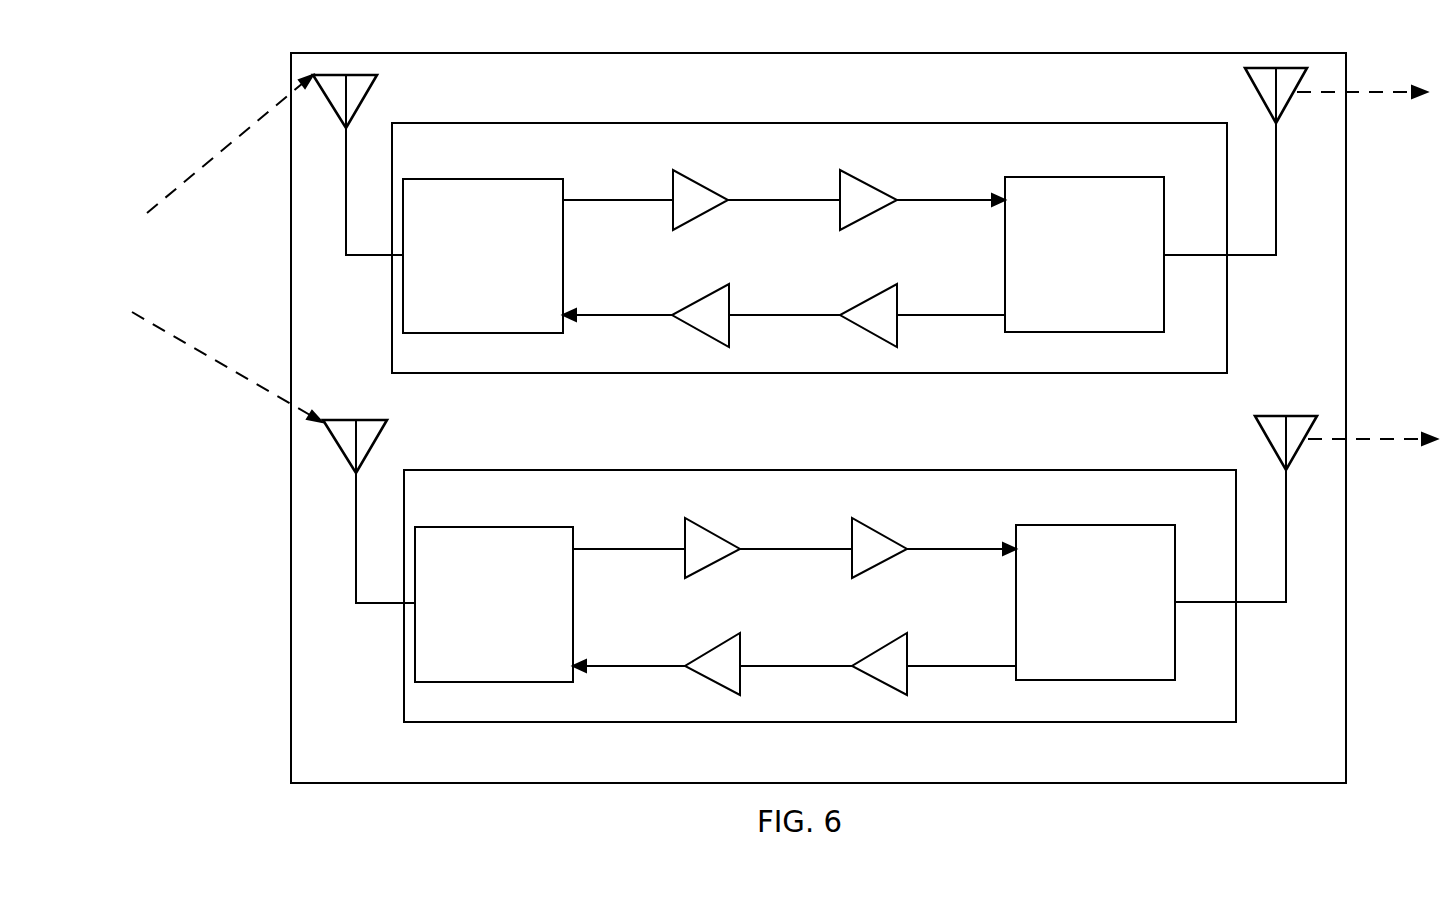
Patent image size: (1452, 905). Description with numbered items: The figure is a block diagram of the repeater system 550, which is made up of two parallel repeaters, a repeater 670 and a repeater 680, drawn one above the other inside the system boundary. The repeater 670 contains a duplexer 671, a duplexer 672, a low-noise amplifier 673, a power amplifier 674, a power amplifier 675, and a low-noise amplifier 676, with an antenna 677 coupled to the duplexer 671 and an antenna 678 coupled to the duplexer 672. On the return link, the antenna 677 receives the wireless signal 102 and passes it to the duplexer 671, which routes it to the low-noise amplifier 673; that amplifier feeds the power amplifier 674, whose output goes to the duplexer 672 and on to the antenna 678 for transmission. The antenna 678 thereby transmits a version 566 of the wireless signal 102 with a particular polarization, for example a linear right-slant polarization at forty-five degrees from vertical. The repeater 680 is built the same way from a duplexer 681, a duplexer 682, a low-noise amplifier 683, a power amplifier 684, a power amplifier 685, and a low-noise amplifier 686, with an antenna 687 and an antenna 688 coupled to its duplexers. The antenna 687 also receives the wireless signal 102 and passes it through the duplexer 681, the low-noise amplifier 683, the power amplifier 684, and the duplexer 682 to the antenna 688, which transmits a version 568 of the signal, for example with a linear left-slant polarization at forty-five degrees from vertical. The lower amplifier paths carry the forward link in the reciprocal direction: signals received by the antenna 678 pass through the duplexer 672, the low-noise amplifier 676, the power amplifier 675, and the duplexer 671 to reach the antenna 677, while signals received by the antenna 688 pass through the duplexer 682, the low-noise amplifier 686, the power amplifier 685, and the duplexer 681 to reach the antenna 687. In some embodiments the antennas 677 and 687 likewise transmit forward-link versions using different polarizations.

The repeater system 550 is at (1093, 53).
The wireless signal 102 is at (227, 138).
The version of the wireless signal 566 is at (1374, 93).
The version of the wireless signal 568 is at (1366, 440).
The repeater 670 is at (990, 123).
The duplexer 671 is at (504, 179).
The duplexer 672 is at (1105, 177).
The low-noise amplifier 673 is at (698, 215).
The power amplifier 674 is at (865, 216).
The power amplifier 675 is at (700, 331).
The low-noise amplifier 676 is at (870, 332).
The antenna 677 is at (366, 95).
The antenna 678 is at (1255, 85).
The repeater 680 is at (1000, 470).
The duplexer 681 is at (515, 527).
The duplexer 682 is at (1116, 525).
The low-noise amplifier 683 is at (710, 566).
The power amplifier 684 is at (877, 566).
The power amplifier 685 is at (712, 681).
The low-noise amplifier 686 is at (882, 681).
The antenna 687 is at (376, 440).
The antenna 688 is at (1264, 432).